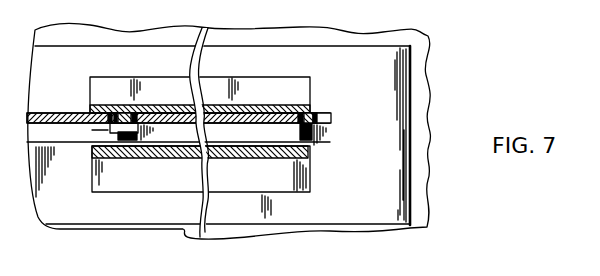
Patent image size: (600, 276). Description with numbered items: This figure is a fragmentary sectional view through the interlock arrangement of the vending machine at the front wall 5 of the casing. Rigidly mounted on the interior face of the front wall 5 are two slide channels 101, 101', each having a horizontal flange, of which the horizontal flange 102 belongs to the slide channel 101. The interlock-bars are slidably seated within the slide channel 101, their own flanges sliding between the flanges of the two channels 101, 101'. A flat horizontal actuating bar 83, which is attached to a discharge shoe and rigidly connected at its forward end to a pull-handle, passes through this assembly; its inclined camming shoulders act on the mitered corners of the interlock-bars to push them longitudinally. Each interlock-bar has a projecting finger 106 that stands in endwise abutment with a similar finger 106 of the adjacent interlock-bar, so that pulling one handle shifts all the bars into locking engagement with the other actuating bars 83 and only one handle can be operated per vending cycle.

The front wall 5 is at (417, 98).
The actuating bar 83 is at (118, 114).
The slide channel 101' is at (223, 88).
The slide channel 101 is at (228, 169).
The horizontal flange 102 is at (308, 154).
The projecting finger 106 is at (112, 136).